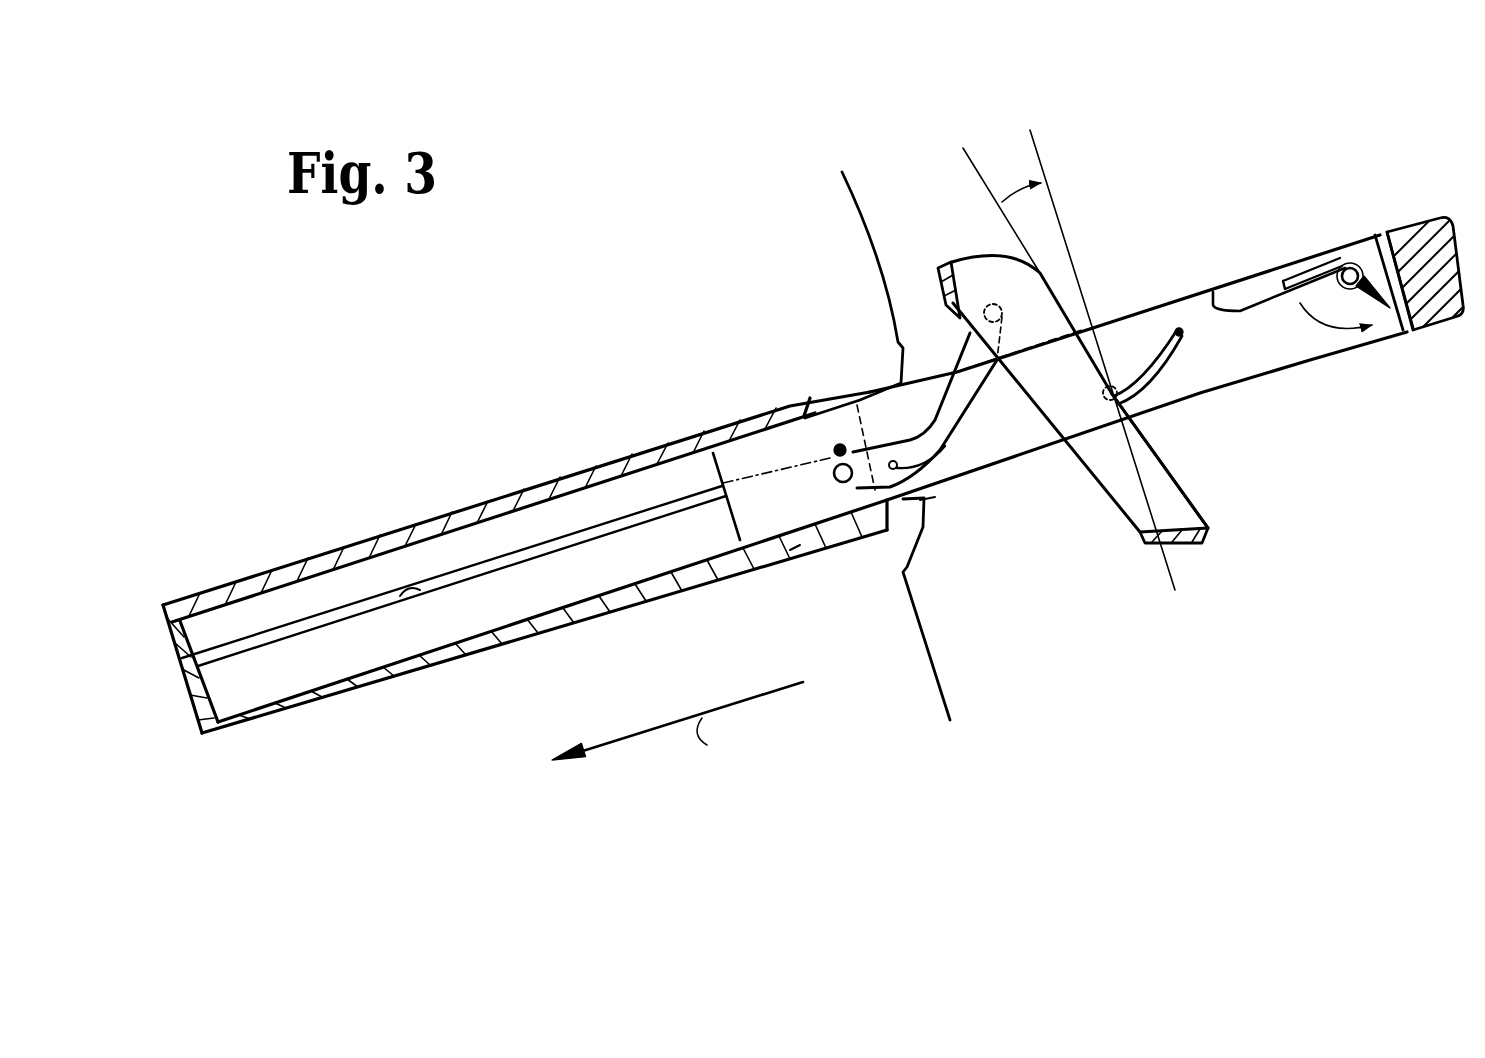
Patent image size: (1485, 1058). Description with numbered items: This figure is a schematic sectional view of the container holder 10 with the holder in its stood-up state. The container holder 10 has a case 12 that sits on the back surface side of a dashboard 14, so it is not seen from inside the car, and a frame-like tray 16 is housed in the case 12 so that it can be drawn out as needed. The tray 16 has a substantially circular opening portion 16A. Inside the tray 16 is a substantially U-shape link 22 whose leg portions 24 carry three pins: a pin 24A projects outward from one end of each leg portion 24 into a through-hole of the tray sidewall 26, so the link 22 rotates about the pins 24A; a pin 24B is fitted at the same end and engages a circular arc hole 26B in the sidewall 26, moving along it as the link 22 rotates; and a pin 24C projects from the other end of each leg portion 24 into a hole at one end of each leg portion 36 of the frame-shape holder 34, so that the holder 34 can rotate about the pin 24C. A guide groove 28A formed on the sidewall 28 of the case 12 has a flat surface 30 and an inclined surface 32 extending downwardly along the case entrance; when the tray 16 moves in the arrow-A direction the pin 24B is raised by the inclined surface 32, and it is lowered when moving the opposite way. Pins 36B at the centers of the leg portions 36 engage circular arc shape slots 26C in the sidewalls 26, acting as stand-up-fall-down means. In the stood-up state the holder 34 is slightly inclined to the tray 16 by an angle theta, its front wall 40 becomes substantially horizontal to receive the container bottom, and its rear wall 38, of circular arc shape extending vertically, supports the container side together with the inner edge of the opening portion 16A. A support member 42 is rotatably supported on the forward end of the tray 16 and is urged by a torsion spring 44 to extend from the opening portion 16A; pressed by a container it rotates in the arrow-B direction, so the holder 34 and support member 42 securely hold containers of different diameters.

The container holder 10 is at (1092, 146).
The case 12 is at (578, 628).
The dashboard 14 is at (874, 240).
The tray 16 is at (1283, 376).
The opening portion 16A is at (1373, 243).
The link 22 is at (957, 400).
The leg portion 24 is at (950, 444).
The pin 24A is at (930, 507).
The pin 24B is at (848, 490).
The pin 24C is at (1000, 305).
The sidewall 26 is at (1313, 343).
The circular arc hole 26B is at (832, 450).
The circular arc shape slot 26C is at (1180, 330).
The sidewall 28 is at (670, 553).
The guide groove 28A is at (538, 533).
The flat surface 30 is at (415, 595).
The inclined surface 32 is at (793, 550).
The holder 34 is at (1186, 473).
The leg portion 36 is at (1135, 503).
The pin 36B is at (1122, 402).
The rear wall 38 is at (957, 266).
The front wall 40 is at (1195, 550).
The support member 42 is at (1257, 290).
The torsion spring 44 is at (1305, 265).